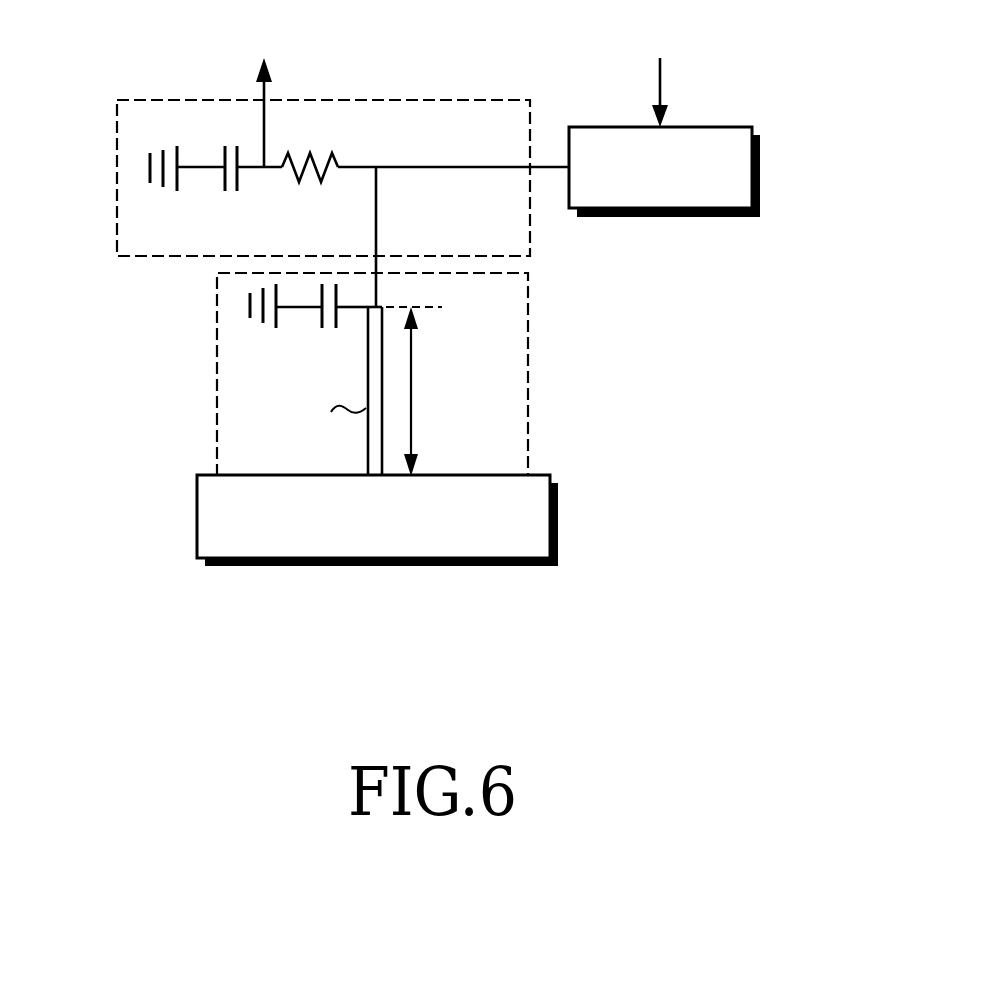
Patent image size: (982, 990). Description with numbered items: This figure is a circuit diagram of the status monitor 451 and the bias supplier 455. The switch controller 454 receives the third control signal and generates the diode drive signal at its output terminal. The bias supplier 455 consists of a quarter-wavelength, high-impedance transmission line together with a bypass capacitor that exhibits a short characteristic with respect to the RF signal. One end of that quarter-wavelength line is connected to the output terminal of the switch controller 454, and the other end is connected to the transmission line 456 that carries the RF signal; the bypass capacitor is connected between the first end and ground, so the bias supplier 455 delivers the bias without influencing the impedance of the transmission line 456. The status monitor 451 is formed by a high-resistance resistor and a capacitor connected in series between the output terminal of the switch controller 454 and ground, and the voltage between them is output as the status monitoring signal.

The status monitor 451 is at (117, 174).
The switch controller 454 is at (761, 170).
The bias supplier 455 is at (529, 378).
The transmission line 456 is at (559, 528).